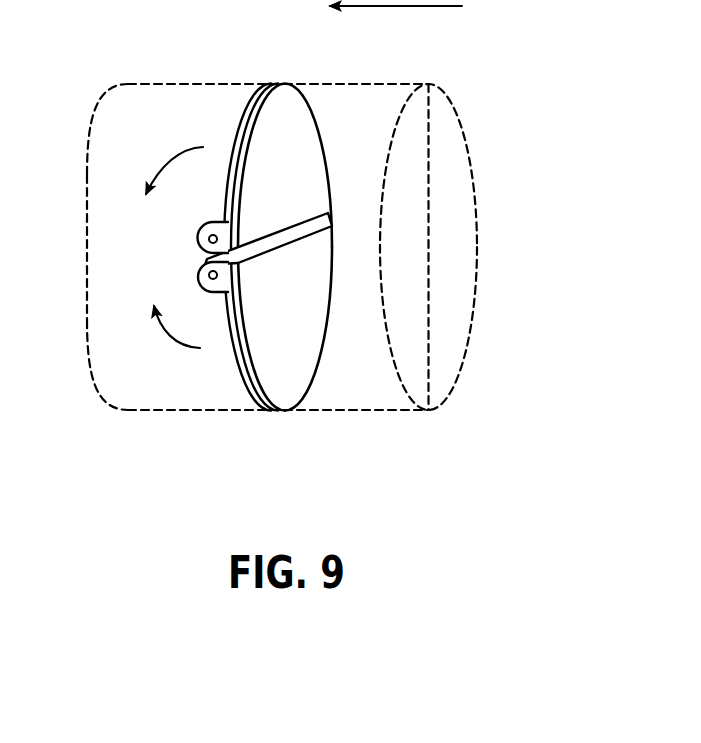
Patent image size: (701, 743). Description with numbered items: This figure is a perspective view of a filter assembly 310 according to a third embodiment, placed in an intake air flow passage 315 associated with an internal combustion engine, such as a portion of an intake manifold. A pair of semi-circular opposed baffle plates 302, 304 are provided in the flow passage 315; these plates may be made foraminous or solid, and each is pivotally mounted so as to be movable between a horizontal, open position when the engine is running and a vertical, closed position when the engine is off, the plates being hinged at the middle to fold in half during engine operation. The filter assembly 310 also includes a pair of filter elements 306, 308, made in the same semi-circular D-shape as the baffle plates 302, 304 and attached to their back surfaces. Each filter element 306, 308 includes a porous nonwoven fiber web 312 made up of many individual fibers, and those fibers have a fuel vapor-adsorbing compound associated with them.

The baffle plate 302 is at (284, 157).
The baffle plate 304 is at (294, 319).
The filter element 306 is at (232, 152).
The filter element 308 is at (247, 391).
The filter assembly 310 is at (328, 385).
The porous nonwoven fiber web 312 is at (252, 92).
The intake air flow passage 315 is at (177, 408).